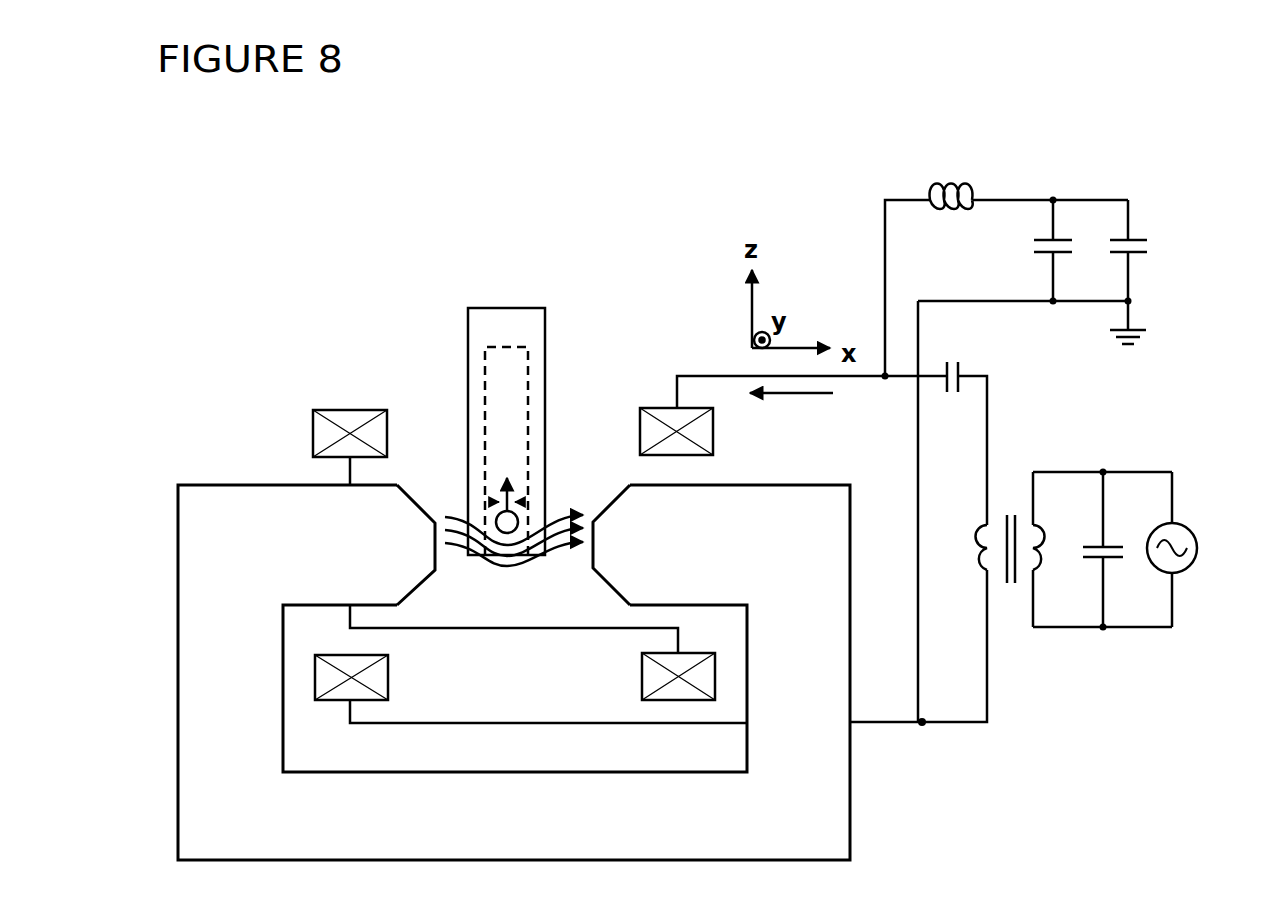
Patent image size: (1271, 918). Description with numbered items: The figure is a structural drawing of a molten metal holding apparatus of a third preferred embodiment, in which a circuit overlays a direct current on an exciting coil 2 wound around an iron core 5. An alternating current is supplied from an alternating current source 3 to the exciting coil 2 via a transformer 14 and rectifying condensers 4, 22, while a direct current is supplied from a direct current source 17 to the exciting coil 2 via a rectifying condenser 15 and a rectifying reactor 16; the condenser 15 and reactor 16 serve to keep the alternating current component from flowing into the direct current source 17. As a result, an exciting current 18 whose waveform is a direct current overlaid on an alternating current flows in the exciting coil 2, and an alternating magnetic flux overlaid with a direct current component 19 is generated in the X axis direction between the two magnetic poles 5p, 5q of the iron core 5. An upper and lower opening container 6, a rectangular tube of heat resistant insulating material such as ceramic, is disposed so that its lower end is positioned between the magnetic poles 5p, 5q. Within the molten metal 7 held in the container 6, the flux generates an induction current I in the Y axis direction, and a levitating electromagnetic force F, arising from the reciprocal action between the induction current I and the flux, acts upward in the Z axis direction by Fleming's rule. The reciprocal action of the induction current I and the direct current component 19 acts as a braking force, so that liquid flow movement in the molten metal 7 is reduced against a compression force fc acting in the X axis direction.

The exciting coil 2 is at (350, 415).
The alternating current source 3 is at (1178, 530).
The rectifying condenser 4 is at (1115, 545).
The iron core 5 is at (840, 750).
The magnetic pole 5p is at (412, 545).
The magnetic pole 5q is at (616, 545).
The upper and lower opening container 6 is at (533, 315).
The molten metal 7 is at (505, 360).
The transformer 14 is at (1012, 590).
The rectifying condenser 15 is at (1073, 245).
The rectifying reactor 16 is at (966, 183).
The direct current source 17 is at (1145, 250).
The exciting current 18 is at (791, 420).
The direct current component 19 is at (510, 538).
The rectifying condenser 22 is at (960, 385).
The levitating electromagnetic force F is at (503, 483).
The compression force fc is at (518, 497).
The induction current I is at (493, 518).